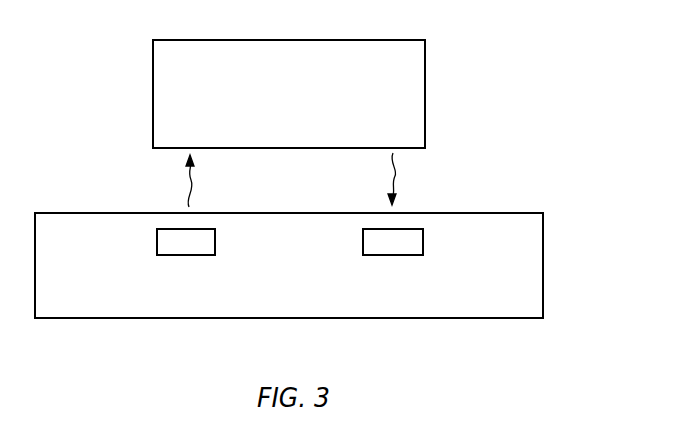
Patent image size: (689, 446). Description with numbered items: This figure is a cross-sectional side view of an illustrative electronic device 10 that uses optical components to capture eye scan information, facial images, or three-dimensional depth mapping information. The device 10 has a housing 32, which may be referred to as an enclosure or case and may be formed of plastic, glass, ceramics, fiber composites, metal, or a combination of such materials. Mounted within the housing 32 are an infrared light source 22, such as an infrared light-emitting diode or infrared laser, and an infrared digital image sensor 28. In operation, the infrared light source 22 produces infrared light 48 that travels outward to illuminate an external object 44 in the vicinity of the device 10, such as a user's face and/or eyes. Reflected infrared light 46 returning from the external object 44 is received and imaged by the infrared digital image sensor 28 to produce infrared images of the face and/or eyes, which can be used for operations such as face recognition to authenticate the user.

The electronic device 10 is at (580, 232).
The infrared light source 22 is at (184, 256).
The infrared digital image sensor 28 is at (393, 256).
The housing 32 is at (543, 268).
The external object 44 is at (425, 92).
The reflected infrared light 46 is at (395, 176).
The infrared light 48 is at (191, 180).